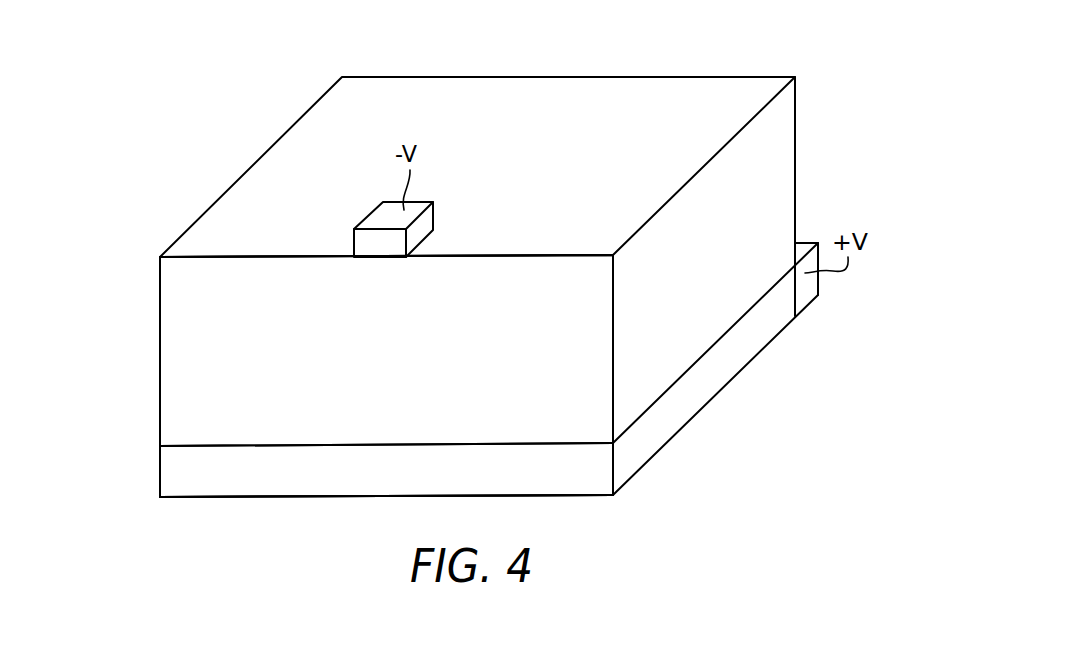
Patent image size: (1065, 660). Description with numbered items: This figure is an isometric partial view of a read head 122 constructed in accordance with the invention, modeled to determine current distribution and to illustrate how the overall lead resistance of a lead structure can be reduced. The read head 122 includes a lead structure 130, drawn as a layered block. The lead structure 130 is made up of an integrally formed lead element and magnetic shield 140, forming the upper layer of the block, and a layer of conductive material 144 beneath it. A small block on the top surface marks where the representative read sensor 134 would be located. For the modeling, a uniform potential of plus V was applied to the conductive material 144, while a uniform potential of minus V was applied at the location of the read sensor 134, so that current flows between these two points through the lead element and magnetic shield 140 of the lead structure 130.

The read head 122 is at (183, 167).
The lead structure 130 is at (140, 260).
The read sensor 134 is at (370, 240).
The integrally formed lead element and magnetic shield 140 is at (178, 367).
The layer of conductive material 144 is at (178, 473).